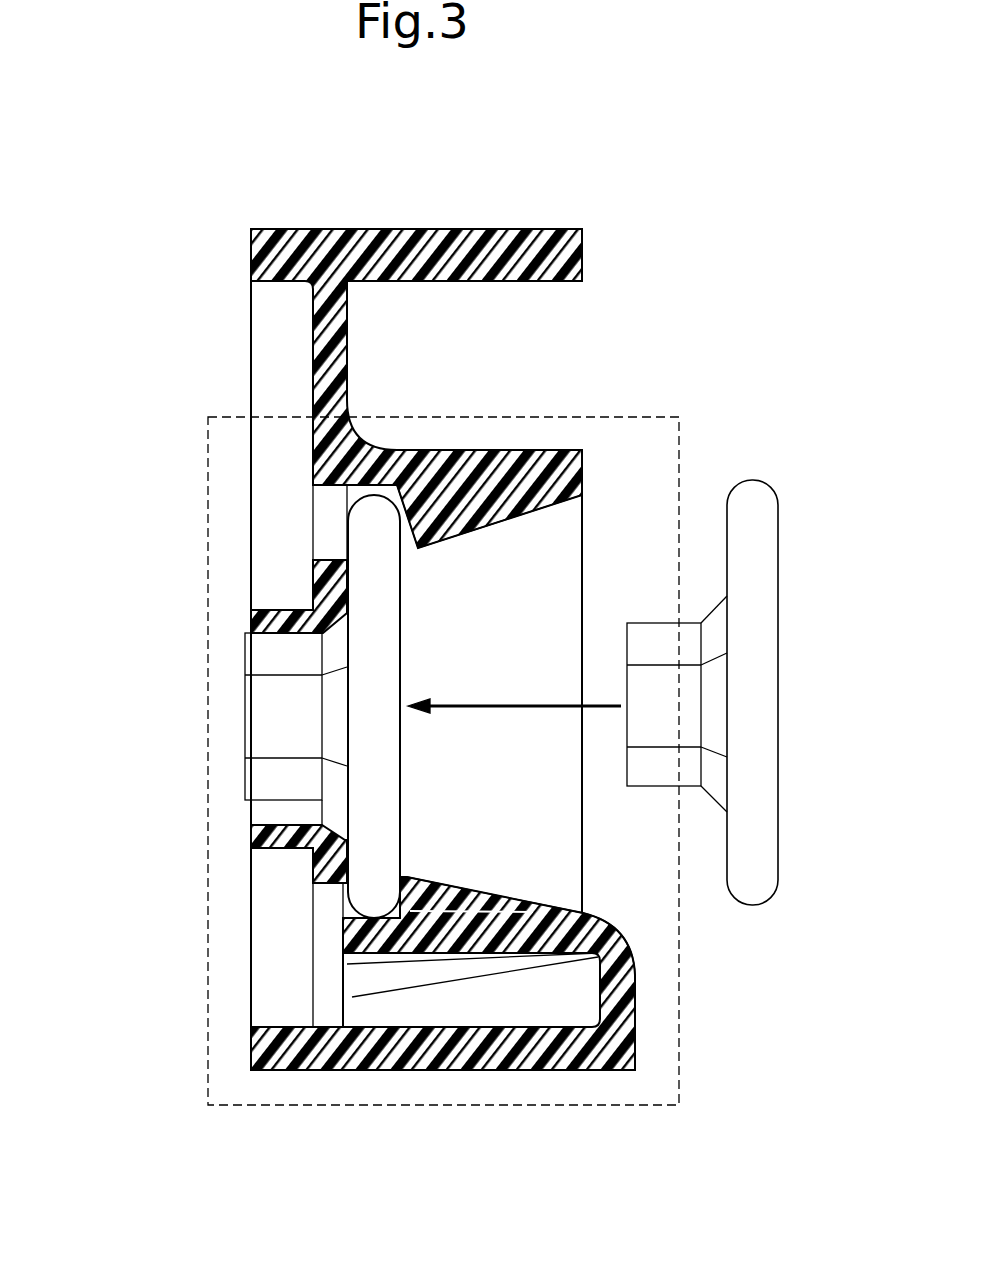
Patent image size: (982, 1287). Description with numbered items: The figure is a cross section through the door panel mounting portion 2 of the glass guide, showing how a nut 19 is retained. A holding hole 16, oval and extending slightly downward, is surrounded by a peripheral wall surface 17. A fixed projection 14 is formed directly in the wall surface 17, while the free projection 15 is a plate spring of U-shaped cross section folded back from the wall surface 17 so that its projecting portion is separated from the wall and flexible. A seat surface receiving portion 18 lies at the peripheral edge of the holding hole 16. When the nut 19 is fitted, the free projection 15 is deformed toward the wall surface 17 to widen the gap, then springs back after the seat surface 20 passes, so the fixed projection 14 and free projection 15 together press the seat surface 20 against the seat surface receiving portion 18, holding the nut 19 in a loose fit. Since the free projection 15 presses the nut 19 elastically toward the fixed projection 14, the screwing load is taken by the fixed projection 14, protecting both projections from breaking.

The door panel mounting portion 2 is at (215, 410).
The fixed projection 14 is at (470, 512).
The free projection 15 is at (480, 887).
The holding hole 16 is at (280, 809).
The peripheral wall surface 17 is at (453, 268).
The seat surface receiving portion 18 is at (338, 585).
The nut 19 is at (274, 709).
The seat surface 20 is at (759, 504).